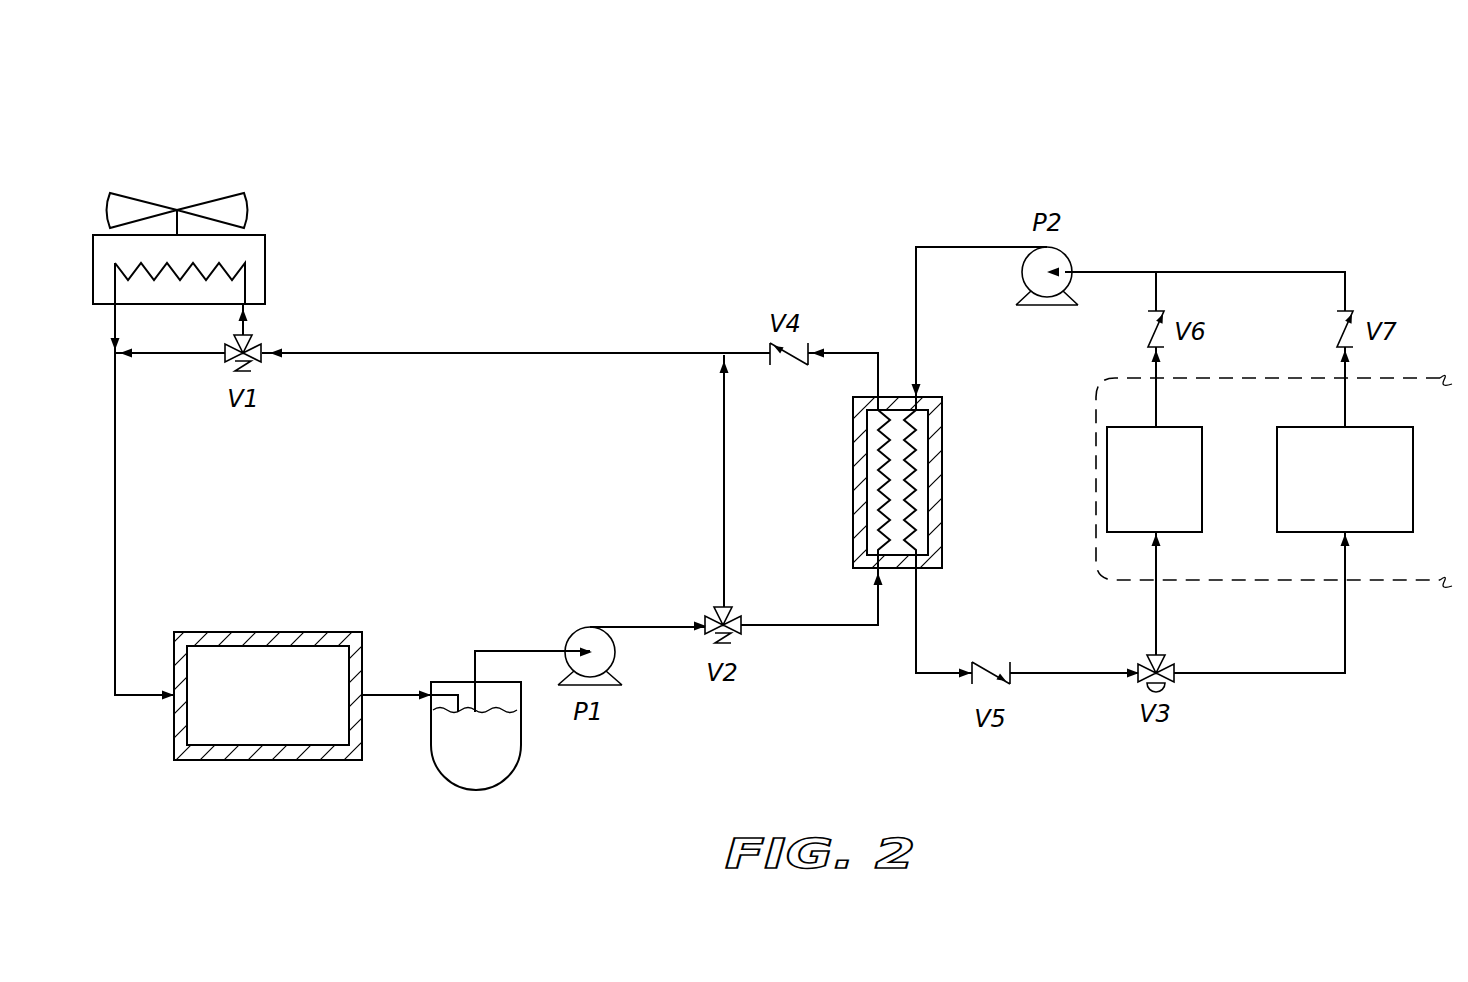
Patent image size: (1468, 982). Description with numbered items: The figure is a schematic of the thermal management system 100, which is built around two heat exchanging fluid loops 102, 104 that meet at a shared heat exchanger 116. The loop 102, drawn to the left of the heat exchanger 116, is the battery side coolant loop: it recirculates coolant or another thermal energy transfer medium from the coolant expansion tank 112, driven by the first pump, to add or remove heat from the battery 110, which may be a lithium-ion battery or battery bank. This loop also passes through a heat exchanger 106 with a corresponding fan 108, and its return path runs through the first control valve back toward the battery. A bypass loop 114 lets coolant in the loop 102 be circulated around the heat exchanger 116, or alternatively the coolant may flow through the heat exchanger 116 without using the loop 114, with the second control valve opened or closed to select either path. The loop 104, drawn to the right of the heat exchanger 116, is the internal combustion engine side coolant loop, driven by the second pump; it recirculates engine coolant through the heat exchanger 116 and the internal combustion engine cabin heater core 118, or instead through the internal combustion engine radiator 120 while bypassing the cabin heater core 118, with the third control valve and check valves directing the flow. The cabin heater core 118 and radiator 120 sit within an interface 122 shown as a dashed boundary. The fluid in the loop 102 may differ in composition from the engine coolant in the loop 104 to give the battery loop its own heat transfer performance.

The thermal management system 100 is at (788, 170).
The heat exchanging fluid loop 102 is at (546, 295).
The heat exchanging fluid loop 104 is at (1246, 244).
The heat exchanger 106 is at (268, 252).
The fan 108 is at (250, 211).
The battery 110 is at (267, 632).
The coolant expansion tank 112 is at (456, 680).
The bypass loop 114 is at (727, 495).
The heat exchanger 116 is at (943, 528).
The internal combustion engine cabin heater core 118 is at (1175, 535).
The internal combustion engine radiator 120 is at (1377, 535).
The interface 122 is at (1180, 582).